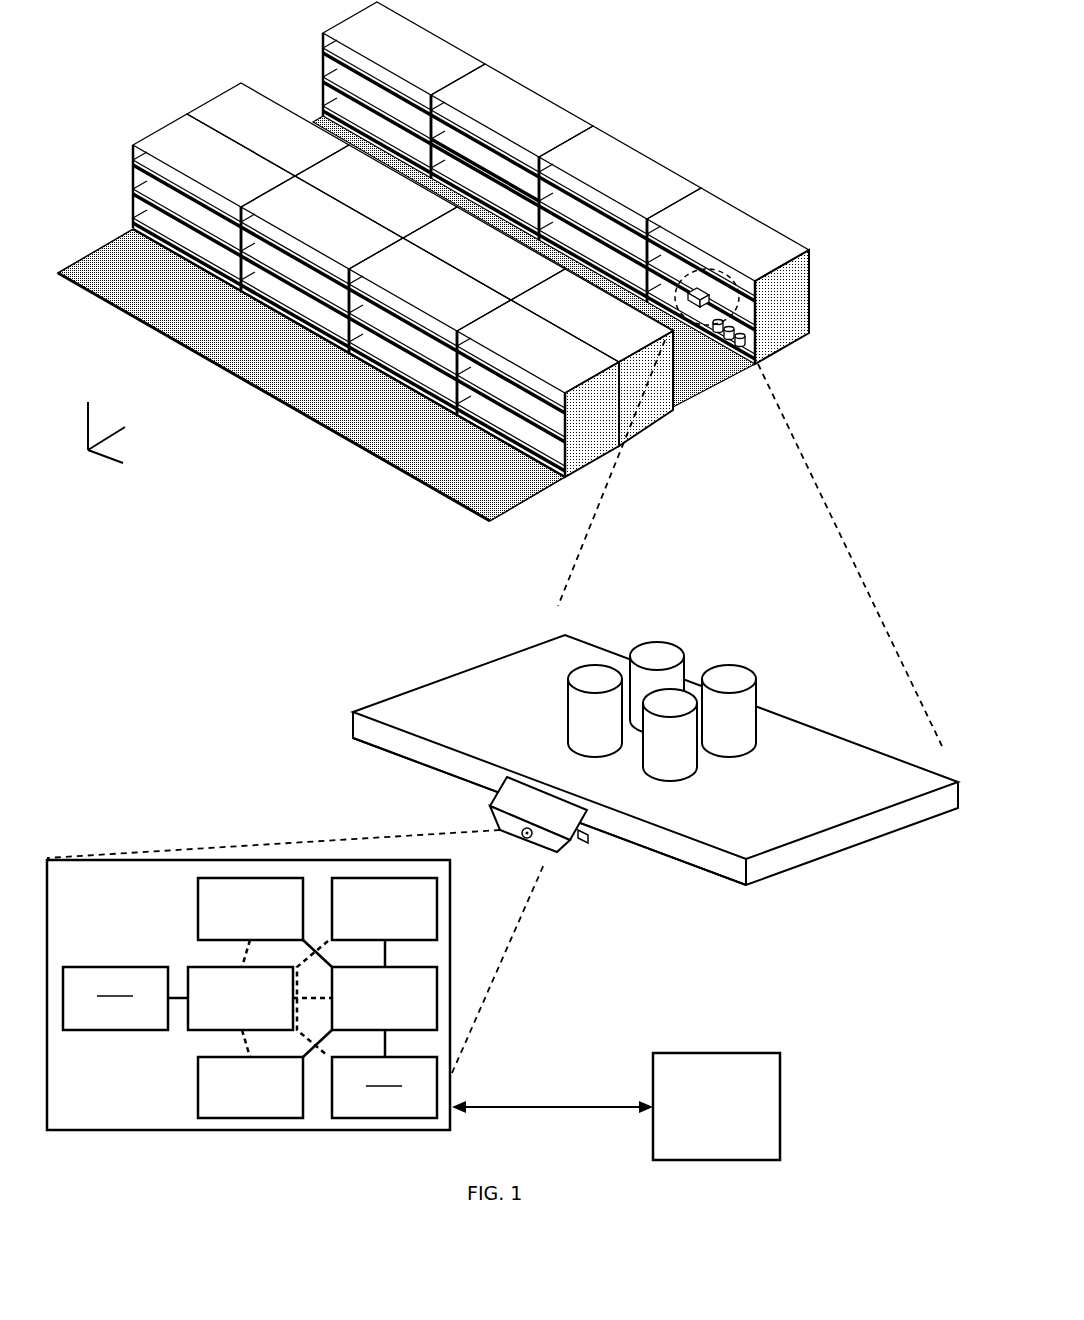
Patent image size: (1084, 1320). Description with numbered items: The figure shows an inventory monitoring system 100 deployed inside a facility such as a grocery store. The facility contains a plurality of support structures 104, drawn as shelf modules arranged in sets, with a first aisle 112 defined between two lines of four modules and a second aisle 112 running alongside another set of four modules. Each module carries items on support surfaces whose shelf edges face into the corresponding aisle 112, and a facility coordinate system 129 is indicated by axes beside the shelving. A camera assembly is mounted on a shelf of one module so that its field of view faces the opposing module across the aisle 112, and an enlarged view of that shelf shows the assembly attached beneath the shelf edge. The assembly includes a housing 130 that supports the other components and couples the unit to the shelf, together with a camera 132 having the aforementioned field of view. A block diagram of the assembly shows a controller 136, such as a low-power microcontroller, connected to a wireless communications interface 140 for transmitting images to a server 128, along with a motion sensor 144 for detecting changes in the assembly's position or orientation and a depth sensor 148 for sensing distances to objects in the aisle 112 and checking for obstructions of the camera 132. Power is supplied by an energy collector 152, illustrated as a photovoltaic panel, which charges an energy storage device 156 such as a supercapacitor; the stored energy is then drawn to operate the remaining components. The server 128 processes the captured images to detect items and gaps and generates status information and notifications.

The inventory monitoring system 100 is at (704, 92).
The support structure 104 is at (792, 300).
The aisle 112 is at (345, 452).
The server 128 is at (699, 1105).
The facility coordinate system 129 is at (88, 455).
The housing 130 is at (583, 842).
The camera 132 is at (522, 836).
The controller 136 is at (366, 996).
The wireless communications interface 140 is at (366, 907).
The motion sensor 144 is at (232, 907).
The depth sensor 148 is at (232, 1086).
The energy collector 152 is at (503, 805).
The energy storage device 156 is at (222, 996).